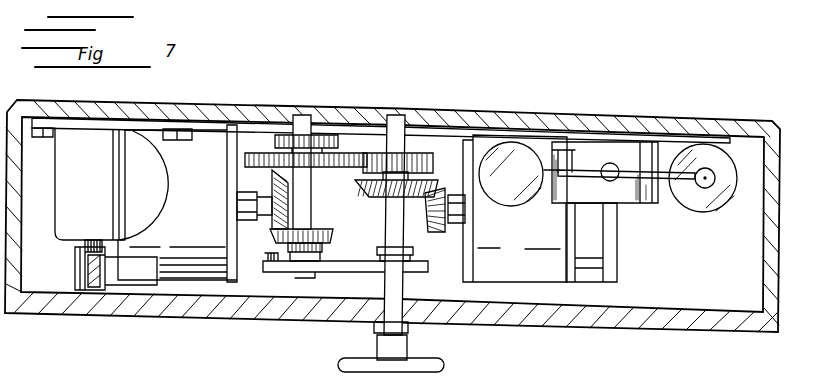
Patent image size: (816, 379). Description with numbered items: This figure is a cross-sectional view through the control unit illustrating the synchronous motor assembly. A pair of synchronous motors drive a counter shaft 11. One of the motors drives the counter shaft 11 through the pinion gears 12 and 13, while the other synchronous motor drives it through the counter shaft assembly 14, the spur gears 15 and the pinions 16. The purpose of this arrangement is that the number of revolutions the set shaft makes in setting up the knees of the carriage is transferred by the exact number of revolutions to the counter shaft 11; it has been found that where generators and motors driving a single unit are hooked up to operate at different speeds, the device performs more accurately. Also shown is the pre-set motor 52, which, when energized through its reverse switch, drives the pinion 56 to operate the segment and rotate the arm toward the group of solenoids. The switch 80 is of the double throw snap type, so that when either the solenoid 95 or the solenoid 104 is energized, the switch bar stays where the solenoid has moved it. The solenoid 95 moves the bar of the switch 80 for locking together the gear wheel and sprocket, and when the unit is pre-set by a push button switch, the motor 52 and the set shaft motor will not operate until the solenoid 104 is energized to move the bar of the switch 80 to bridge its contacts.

The counter shaft 11 is at (309, 218).
The pinion gear 12 is at (274, 214).
The pinion gear 13 is at (332, 238).
The counter shaft assembly 14 is at (393, 310).
The spur gears 15 is at (383, 163).
The pinions 16 is at (408, 202).
The motor 52 is at (90, 184).
The pinion 56 is at (87, 291).
The switch 80 is at (607, 180).
The solenoid 95 is at (707, 206).
The solenoid 104 is at (511, 174).